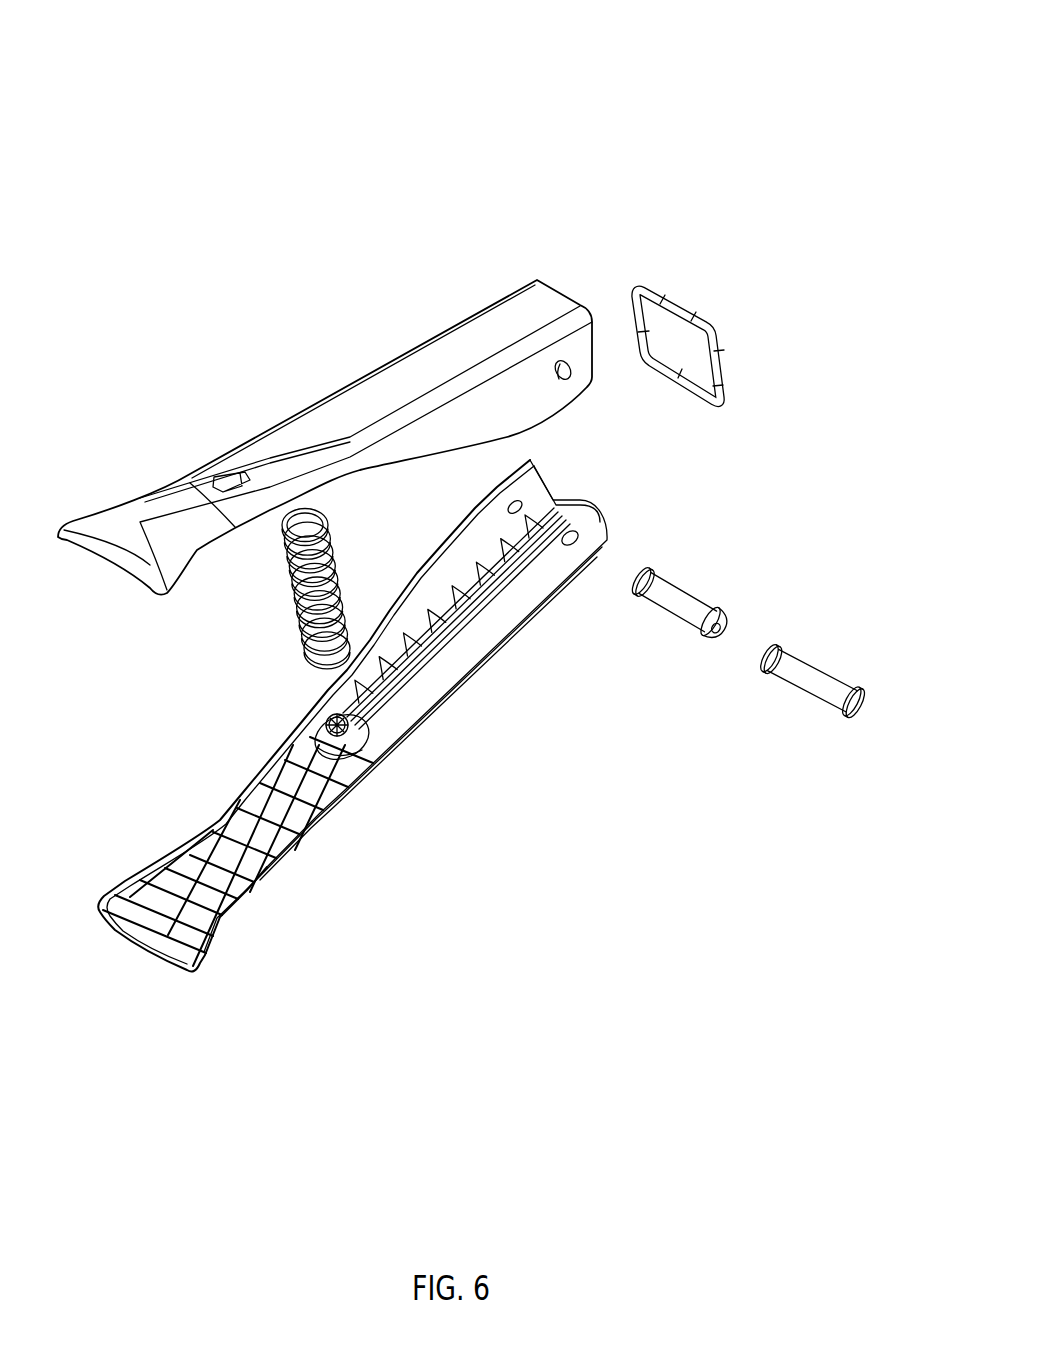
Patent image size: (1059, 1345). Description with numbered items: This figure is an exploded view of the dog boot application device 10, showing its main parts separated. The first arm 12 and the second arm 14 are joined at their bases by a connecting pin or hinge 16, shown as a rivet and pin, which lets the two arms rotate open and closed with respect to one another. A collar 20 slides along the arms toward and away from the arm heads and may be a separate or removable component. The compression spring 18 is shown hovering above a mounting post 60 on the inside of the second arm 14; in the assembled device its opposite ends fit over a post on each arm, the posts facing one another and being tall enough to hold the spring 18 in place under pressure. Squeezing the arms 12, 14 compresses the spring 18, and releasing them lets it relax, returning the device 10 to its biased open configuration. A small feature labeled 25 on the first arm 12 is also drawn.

The dog boot application device 10 is at (672, 135).
The first arm 12 is at (338, 418).
The second arm 14 is at (503, 623).
The connecting pin or hinge 16 is at (680, 603).
The compression spring 18 is at (373, 660).
The collar 20 is at (655, 285).
The button 25 is at (224, 478).
The mounting post 60 is at (343, 738).